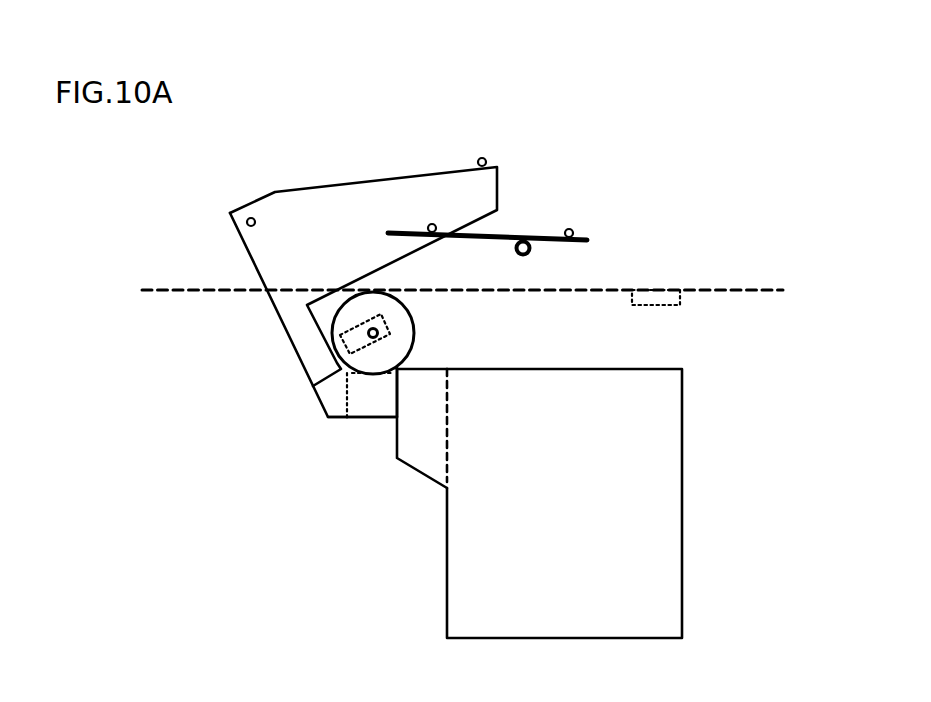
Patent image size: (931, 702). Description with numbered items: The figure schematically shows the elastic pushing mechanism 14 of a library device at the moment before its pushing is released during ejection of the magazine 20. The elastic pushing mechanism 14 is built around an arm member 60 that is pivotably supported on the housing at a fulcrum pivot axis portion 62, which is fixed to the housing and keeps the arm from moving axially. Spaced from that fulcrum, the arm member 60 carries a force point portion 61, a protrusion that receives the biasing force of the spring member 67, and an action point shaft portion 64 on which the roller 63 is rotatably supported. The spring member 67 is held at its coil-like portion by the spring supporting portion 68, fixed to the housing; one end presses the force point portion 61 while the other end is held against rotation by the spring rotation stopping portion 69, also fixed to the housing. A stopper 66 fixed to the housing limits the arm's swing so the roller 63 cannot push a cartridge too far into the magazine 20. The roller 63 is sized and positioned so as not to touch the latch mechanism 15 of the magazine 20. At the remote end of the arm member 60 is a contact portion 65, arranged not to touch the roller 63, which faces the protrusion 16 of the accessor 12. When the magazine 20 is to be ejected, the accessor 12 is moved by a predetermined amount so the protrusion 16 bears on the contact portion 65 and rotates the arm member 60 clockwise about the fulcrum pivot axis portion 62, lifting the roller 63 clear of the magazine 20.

The accessor 12 is at (468, 590).
The elastic pushing mechanism 14 is at (568, 161).
The latch mechanism 15 is at (668, 305).
The protrusion 16 is at (417, 453).
The magazine 20 is at (747, 292).
The arm member 60 is at (288, 310).
The force point portion 61 is at (431, 223).
The fulcrum pivot axis portion 62 is at (250, 217).
The roller 63 is at (402, 318).
The action point shaft portion 64 is at (379, 333).
The contact portion 65 is at (373, 407).
The stopper 66 is at (482, 158).
The spring member 67 is at (503, 232).
The spring supporting portion 68 is at (527, 255).
The spring rotation stopping portion 69 is at (568, 229).